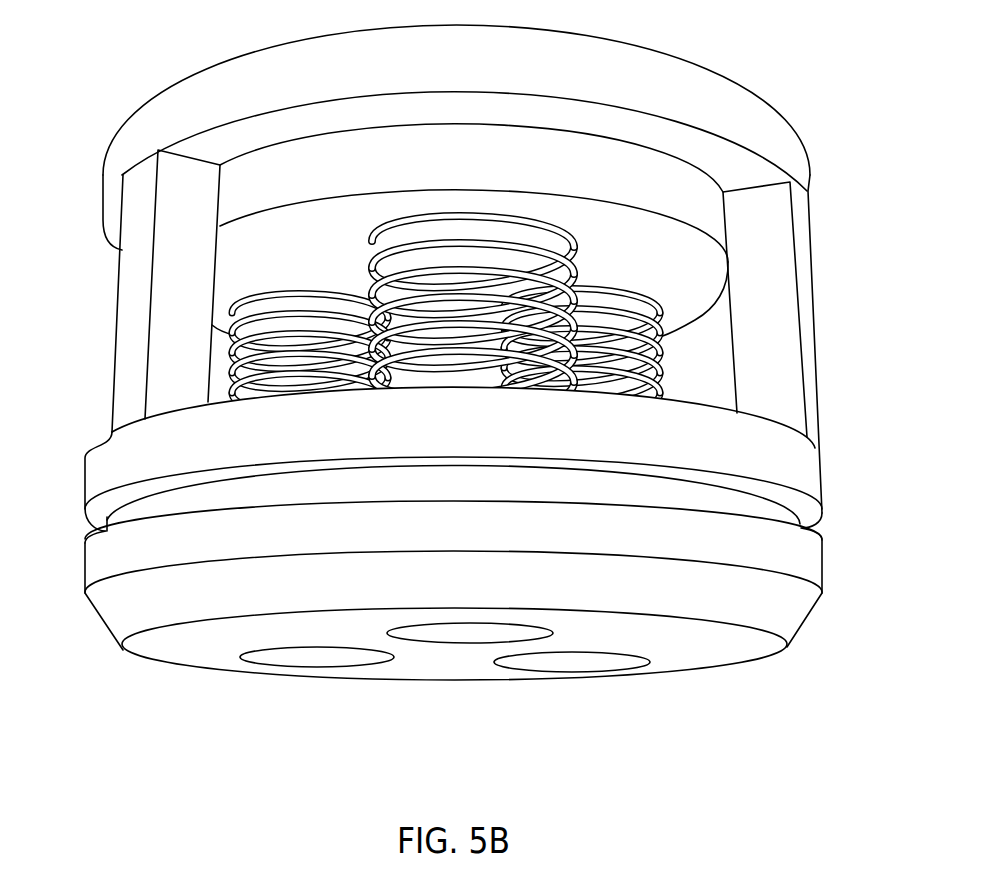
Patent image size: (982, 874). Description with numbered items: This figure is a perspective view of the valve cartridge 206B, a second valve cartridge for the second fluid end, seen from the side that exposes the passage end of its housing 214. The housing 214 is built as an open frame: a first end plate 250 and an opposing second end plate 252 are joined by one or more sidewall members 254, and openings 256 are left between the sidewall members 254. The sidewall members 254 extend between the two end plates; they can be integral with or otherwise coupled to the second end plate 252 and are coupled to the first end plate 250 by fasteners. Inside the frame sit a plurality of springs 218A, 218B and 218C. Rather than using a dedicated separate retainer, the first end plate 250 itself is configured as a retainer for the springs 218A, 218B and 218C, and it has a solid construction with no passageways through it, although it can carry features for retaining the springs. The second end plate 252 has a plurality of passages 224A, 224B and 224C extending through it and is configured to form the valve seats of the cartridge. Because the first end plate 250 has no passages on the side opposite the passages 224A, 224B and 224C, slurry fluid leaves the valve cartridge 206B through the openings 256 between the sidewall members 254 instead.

The valve cartridge 206B is at (158, 52).
The housing 214 is at (555, 230).
The first end plate 250 is at (670, 200).
The spring 218A is at (370, 267).
The spring 218B is at (235, 371).
The spring 218C is at (636, 363).
The passage 224A is at (472, 633).
The passage 224B is at (318, 657).
The passage 224C is at (573, 662).
The second end plate 252 is at (135, 602).
The sidewall member 254 is at (140, 283).
The opening 256 is at (700, 523).